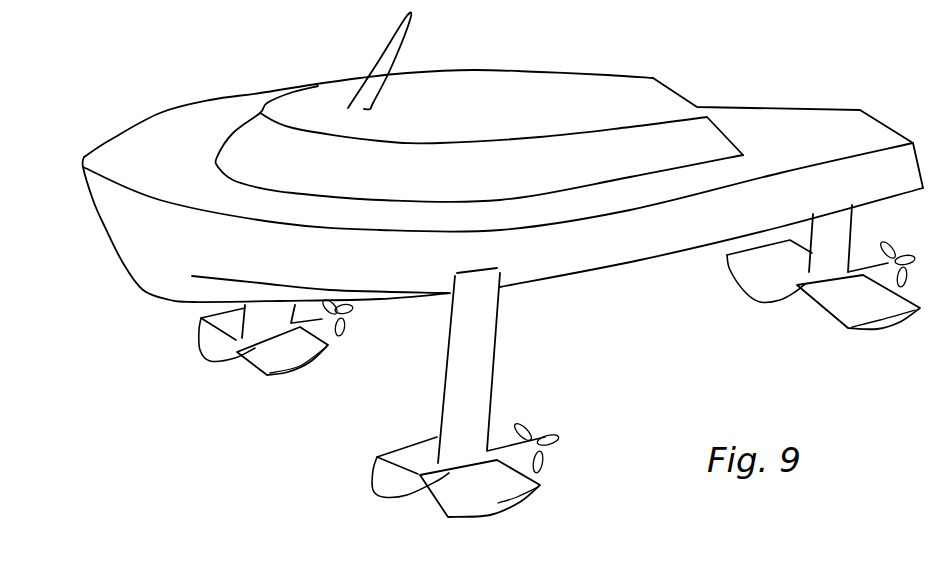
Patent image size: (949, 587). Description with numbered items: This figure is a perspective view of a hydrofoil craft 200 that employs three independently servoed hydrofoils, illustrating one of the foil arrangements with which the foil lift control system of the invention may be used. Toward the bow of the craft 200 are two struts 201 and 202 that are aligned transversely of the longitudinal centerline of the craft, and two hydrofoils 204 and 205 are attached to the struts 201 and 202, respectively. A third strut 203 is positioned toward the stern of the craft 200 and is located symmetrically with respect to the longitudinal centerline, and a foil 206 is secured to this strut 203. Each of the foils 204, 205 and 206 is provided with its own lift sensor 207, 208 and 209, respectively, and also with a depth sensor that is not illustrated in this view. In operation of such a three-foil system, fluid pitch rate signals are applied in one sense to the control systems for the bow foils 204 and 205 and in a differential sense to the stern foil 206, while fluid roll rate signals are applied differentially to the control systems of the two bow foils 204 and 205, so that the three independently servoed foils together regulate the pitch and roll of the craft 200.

The hydrofoil craft 200 is at (479, 173).
The strut 201 is at (252, 322).
The strut 202 is at (483, 368).
The third strut 203 is at (838, 225).
The hydrofoil 204 is at (258, 358).
The hydrofoil 205 is at (497, 505).
The foil 206 is at (867, 325).
The lift sensor 207 is at (203, 333).
The lift sensor 208 is at (440, 511).
The lift sensor 209 is at (835, 325).